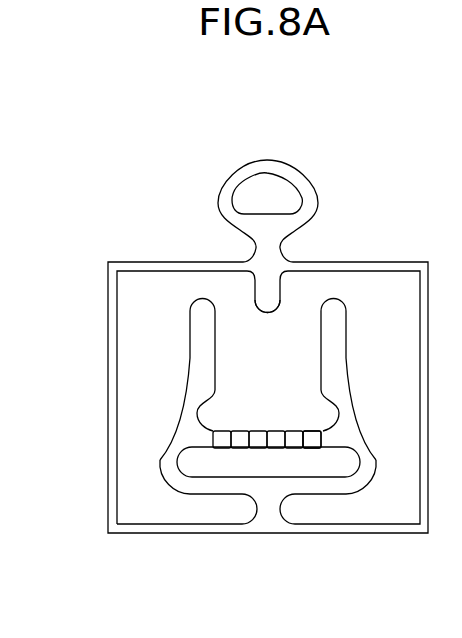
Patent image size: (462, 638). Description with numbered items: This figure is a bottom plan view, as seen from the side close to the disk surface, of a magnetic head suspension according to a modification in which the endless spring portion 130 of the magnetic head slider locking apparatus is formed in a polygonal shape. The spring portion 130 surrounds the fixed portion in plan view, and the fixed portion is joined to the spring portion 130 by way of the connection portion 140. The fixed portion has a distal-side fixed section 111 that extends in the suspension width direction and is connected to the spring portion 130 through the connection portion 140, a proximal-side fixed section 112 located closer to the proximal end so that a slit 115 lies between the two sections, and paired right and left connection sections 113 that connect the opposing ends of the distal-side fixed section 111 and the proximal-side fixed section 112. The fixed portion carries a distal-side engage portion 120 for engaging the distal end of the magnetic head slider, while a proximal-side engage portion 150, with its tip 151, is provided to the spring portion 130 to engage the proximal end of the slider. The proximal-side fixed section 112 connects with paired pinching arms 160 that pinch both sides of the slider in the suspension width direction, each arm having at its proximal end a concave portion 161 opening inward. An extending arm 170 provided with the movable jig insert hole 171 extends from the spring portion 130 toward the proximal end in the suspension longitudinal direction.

The distal-side fixed section 111 is at (215, 487).
The proximal-side fixed section 112 is at (330, 434).
The connection sections 113 is at (167, 468).
The slit 115 is at (293, 474).
The distal-side engage portion 120 is at (262, 424).
The spring portion 130 is at (393, 242).
The connection portion 140 is at (267, 515).
The proximal-side engage portion 150 is at (241, 286).
The tip of protrusion 151 is at (267, 314).
The pinching arms 160 is at (193, 338).
The concave portion 161 is at (207, 422).
The extending arm 170 is at (228, 163).
The movable jig insert hole 171 is at (285, 192).